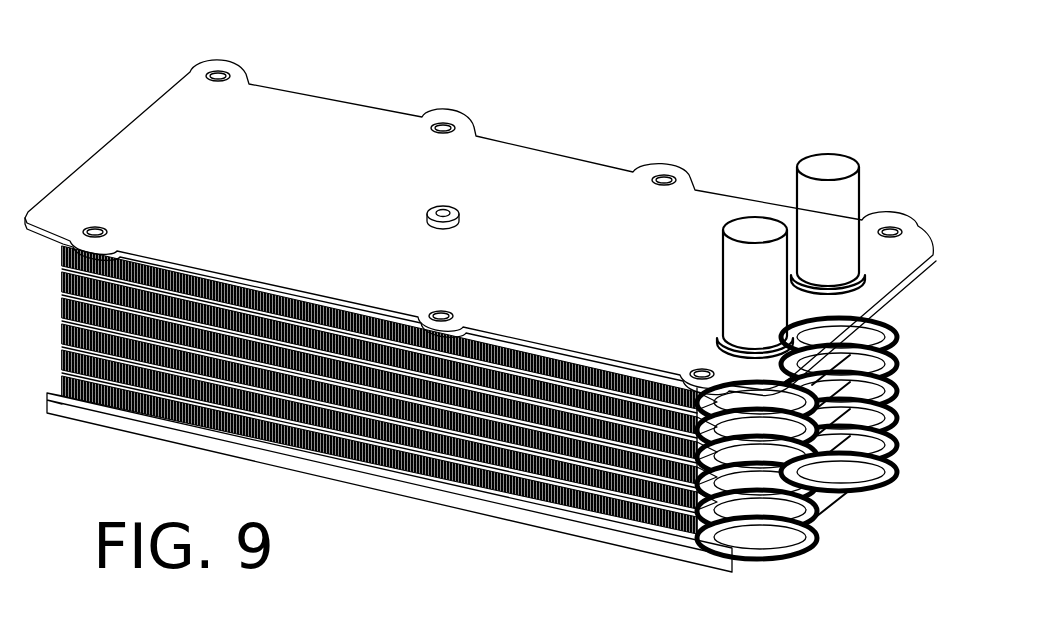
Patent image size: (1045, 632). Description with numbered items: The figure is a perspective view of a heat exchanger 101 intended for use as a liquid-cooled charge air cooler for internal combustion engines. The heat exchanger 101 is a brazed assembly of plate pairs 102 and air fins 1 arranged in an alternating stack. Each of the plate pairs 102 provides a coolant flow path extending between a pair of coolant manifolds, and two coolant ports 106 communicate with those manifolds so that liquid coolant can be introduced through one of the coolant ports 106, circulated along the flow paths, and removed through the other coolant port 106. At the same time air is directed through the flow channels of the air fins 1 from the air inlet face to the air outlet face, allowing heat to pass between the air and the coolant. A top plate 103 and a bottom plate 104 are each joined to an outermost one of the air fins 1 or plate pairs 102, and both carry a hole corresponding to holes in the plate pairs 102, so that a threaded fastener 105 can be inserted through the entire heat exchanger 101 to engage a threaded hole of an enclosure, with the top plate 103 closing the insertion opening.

The heat exchanger 101 is at (480, 303).
The air fin 1 is at (122, 378).
The plate pair 102 is at (800, 548).
The top plate 103 is at (287, 105).
The bottom plate 104 is at (682, 556).
The threaded fastener 105 is at (452, 216).
The coolant port 106 is at (745, 212).